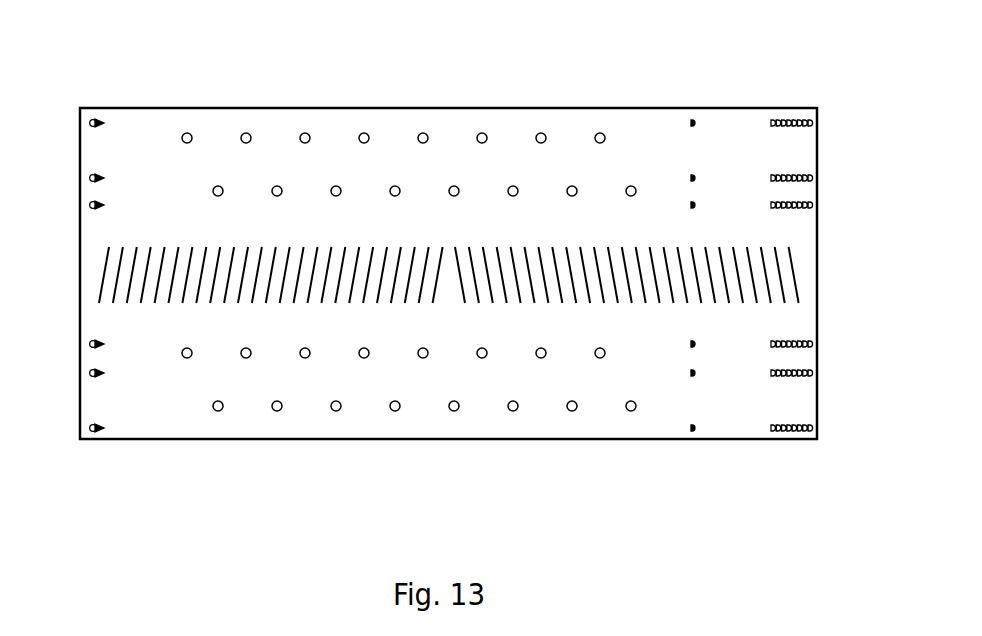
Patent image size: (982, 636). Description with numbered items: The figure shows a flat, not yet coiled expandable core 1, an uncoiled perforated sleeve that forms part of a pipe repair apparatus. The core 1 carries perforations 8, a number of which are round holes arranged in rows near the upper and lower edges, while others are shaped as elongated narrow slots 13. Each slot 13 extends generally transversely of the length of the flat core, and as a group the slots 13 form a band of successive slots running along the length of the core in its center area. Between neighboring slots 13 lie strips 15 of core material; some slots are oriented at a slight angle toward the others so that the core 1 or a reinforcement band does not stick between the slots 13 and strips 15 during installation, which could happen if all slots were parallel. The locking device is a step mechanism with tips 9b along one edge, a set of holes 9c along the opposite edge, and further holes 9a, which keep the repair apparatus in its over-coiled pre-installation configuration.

The expandable core 1 is at (448, 227).
The perforations 8 is at (409, 213).
The slots 13 is at (373, 159).
The strips 15 is at (627, 159).
The holes 9a is at (644, 327).
The tips 9b is at (132, 324).
The set of holes 9c is at (762, 326).